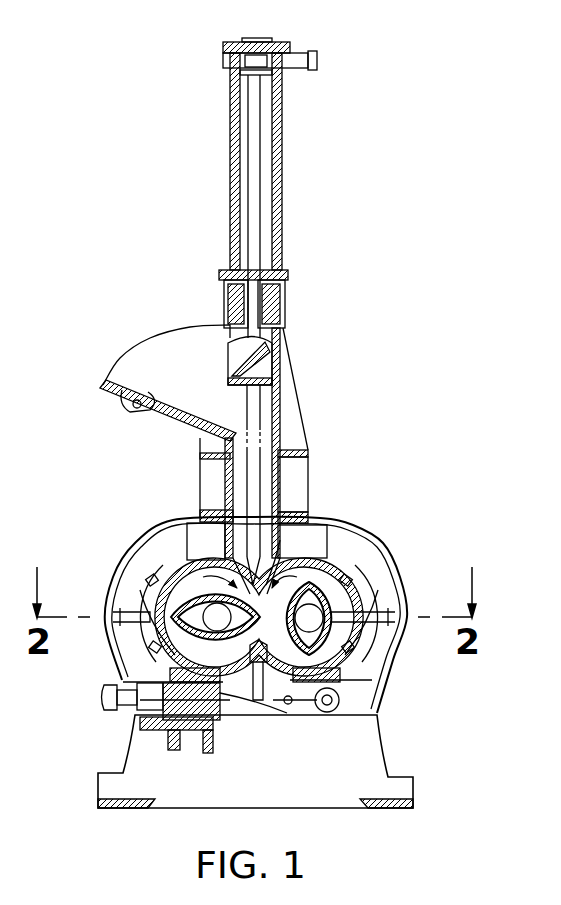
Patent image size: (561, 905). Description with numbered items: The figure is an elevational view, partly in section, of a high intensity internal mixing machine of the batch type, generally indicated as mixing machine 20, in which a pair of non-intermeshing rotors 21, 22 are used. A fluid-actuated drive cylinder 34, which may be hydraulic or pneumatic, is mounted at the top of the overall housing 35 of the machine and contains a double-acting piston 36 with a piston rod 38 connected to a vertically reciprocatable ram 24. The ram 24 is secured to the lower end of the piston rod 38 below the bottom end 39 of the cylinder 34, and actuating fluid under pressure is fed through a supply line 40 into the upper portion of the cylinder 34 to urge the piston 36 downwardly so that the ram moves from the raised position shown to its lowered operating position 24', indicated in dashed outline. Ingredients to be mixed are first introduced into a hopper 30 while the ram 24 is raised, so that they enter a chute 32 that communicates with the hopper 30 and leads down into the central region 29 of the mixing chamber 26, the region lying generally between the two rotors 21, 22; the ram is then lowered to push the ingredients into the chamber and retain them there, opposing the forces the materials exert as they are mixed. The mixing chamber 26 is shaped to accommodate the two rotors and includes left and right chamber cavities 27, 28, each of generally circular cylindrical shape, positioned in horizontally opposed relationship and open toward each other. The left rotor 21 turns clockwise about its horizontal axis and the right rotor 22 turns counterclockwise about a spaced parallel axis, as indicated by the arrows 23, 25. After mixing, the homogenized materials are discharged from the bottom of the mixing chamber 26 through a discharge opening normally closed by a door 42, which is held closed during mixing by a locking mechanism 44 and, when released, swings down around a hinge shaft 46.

The internal mixing machine 20 is at (376, 358).
The left rotor 21 is at (195, 608).
The right rotor 22 is at (335, 655).
The arrow 23 is at (210, 560).
The ram 24 is at (291, 361).
The lowered operating position of ram 24' is at (305, 524).
The arrow 25 is at (288, 552).
The mixing chamber 26 is at (190, 587).
The left chamber cavity 27 is at (180, 637).
The right chamber cavity 28 is at (337, 607).
The central region 29 is at (262, 592).
The hopper 30 is at (140, 356).
The chute 32 is at (262, 423).
The fluid-actuated drive cylinder 34 is at (282, 140).
The housing 35 is at (172, 508).
The double-acting piston 36 is at (268, 75).
The piston rod 38 is at (263, 185).
The bottom end of cylinder 39 is at (284, 296).
The supply line 40 is at (292, 52).
The door 42 is at (268, 684).
The locking mechanism 44 is at (122, 718).
The hinge shaft 46 is at (338, 695).